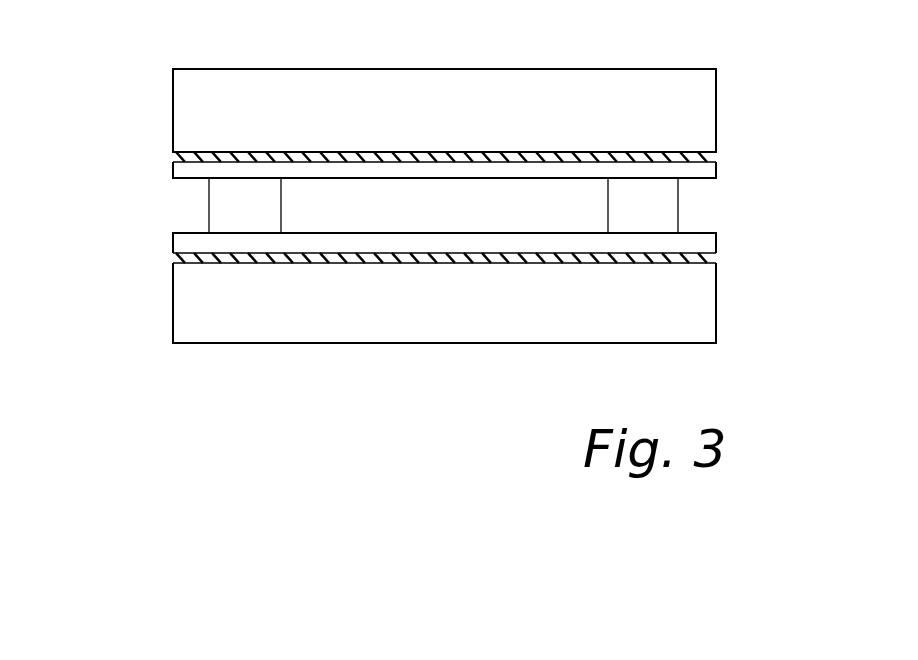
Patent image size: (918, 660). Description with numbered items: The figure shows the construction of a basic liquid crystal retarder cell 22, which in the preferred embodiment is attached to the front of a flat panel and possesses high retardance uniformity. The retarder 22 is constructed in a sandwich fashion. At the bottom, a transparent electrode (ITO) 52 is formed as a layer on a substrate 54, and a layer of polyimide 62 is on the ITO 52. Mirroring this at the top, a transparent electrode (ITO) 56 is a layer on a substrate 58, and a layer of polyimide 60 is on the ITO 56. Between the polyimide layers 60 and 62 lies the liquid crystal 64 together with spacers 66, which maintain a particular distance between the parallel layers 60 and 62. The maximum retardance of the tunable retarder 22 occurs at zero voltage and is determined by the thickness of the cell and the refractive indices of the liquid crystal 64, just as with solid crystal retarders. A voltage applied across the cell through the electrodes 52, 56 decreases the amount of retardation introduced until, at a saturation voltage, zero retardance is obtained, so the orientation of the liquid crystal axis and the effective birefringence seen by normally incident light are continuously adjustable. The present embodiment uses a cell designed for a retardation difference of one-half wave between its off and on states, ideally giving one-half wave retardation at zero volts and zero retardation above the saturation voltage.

The liquid crystal retarder cell 22 is at (699, 32).
The transparent electrode (ITO) 52 is at (717, 257).
The substrate 54 is at (201, 312).
The transparent electrode (ITO) 56 is at (717, 157).
The substrate 58 is at (201, 102).
The polyimide layer 60 is at (174, 172).
The polyimide layer 62 is at (174, 243).
The liquid crystal 64 is at (308, 207).
The spacers 66 is at (679, 207).